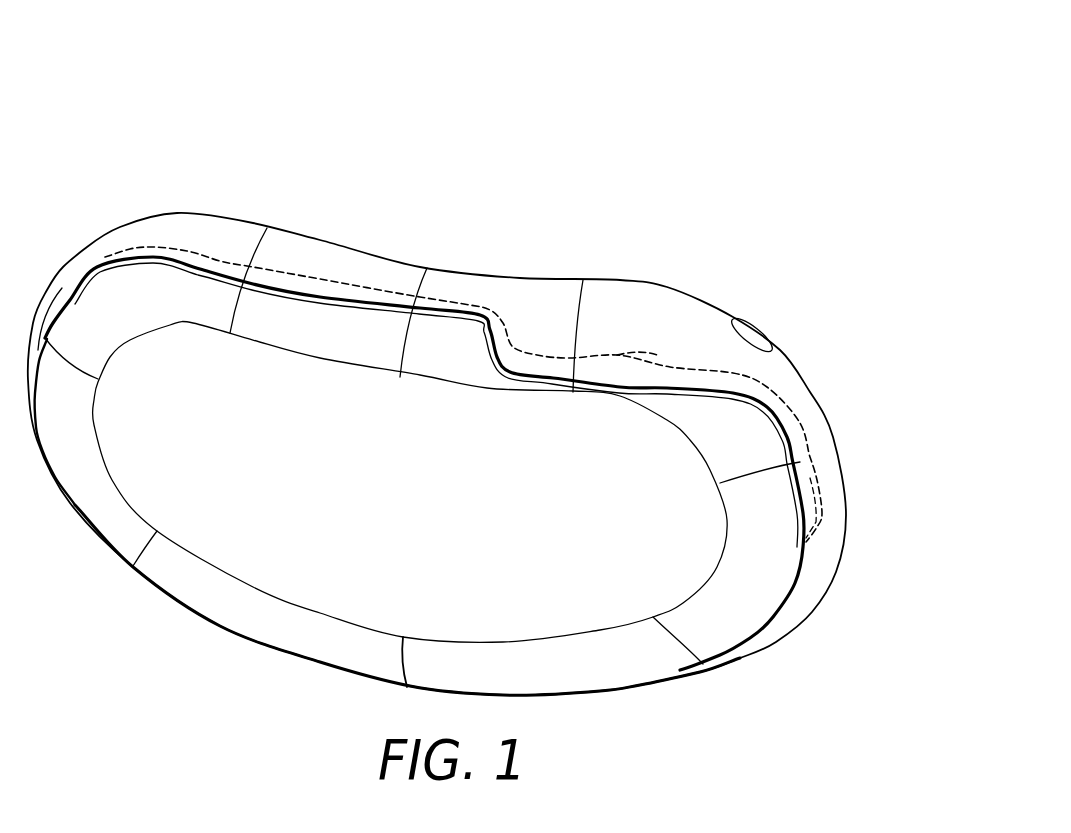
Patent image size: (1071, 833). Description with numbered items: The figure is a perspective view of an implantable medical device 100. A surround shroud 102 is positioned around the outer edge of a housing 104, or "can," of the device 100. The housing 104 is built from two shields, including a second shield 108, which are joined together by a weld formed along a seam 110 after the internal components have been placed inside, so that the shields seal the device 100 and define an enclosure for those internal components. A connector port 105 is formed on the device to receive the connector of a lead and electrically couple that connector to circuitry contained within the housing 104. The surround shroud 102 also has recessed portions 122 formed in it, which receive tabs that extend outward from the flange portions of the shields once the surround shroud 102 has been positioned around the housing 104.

The implantable medical device 100 is at (627, 92).
The surround shroud 102 is at (665, 285).
The housing 104 is at (117, 560).
The connector port 105 is at (763, 333).
The second shield 108 is at (460, 303).
The seam 110 is at (273, 285).
The recessed portions 122 is at (822, 503).